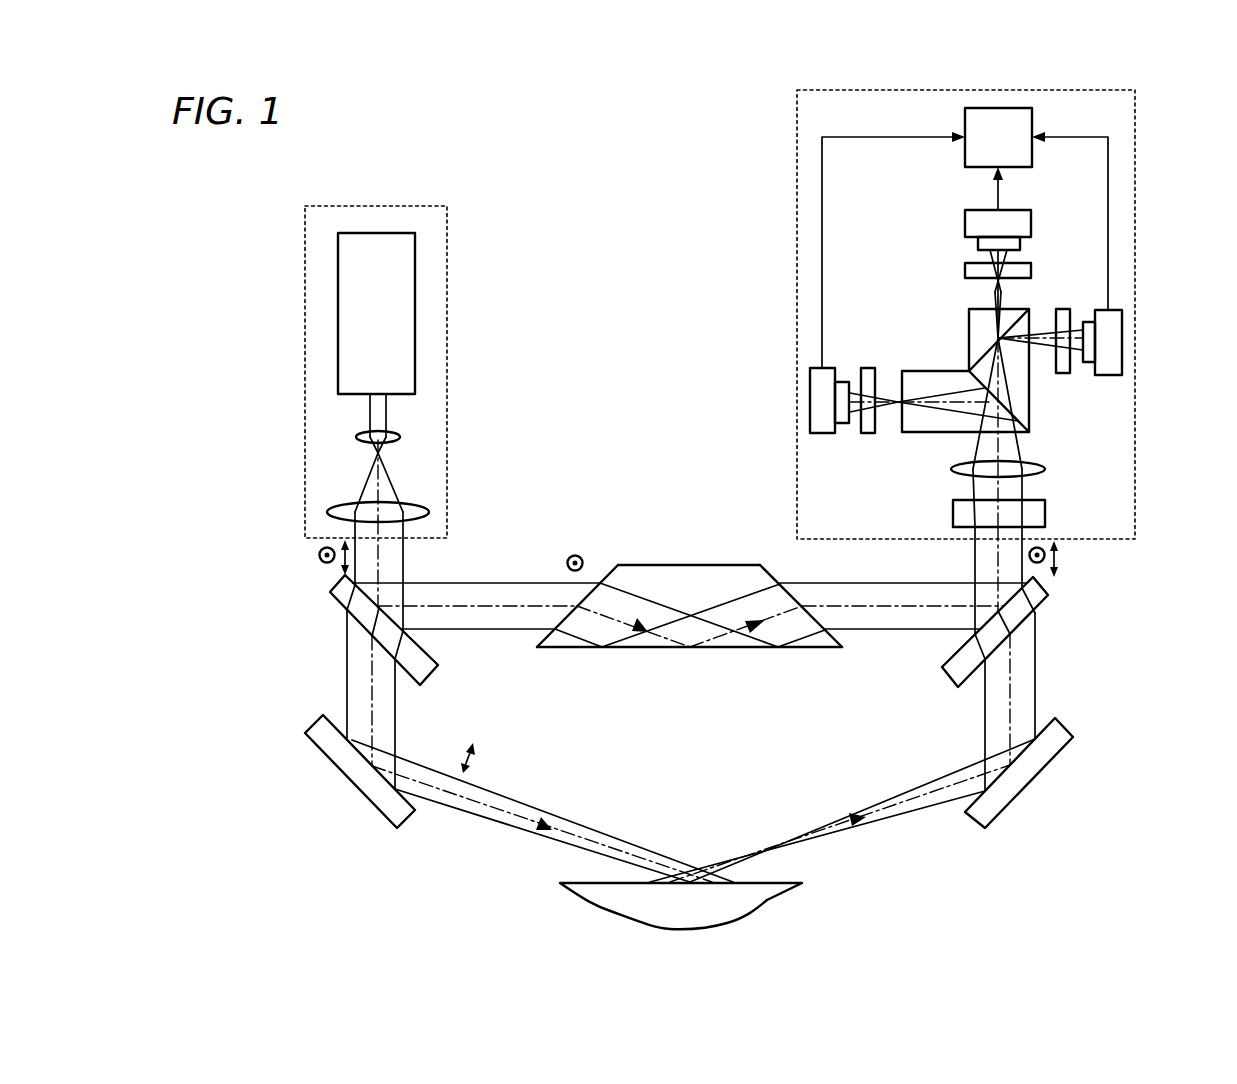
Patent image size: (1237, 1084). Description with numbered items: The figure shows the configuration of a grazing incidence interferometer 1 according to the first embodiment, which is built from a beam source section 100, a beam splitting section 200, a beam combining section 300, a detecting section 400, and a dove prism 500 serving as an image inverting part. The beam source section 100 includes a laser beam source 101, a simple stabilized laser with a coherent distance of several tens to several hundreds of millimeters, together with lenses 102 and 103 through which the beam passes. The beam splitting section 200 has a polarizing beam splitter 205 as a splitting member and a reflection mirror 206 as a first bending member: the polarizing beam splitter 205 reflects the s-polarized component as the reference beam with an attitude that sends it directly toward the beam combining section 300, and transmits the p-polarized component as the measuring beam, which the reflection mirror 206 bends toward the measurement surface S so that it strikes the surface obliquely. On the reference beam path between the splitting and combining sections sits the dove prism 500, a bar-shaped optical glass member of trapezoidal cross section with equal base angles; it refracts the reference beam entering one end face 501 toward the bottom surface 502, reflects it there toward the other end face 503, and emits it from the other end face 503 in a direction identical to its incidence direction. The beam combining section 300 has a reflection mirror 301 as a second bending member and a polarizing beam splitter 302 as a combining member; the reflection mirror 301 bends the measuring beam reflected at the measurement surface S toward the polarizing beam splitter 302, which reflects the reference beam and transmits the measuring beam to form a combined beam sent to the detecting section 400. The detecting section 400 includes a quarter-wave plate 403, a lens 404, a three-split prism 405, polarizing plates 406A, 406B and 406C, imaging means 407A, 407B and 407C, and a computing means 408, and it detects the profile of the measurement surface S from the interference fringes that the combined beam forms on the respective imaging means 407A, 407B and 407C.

The grazing incidence interferometer 1 is at (545, 210).
The beam source section 100 is at (448, 272).
The laser beam source 101 is at (416, 318).
The lens 102 is at (401, 437).
The lens 103 is at (430, 512).
The beam splitting section 200 is at (246, 643).
The polarizing beam splitter 205 is at (330, 590).
The reflection mirror 206 is at (313, 737).
The beam combining section 300 is at (1134, 650).
The reflection mirror 301 is at (1065, 736).
The polarizing beam splitter 302 is at (1050, 590).
The detecting section 400 is at (1137, 122).
The quarter-wave plate 403 is at (1046, 515).
The lens 404 is at (1046, 469).
The three-split prism 405 is at (916, 369).
The polarizing plate 406A is at (867, 436).
The polarizing plate 406B is at (1033, 270).
The polarizing plate 406C is at (1063, 376).
The imaging means 407A is at (809, 402).
The imaging means 407B is at (1033, 222).
The imaging means 407C is at (1123, 340).
The computing means 408 is at (964, 120).
The dove prism 500 is at (688, 564).
The one end face 501 is at (608, 564).
The bottom surface 502 is at (731, 650).
The other end face 503 is at (770, 569).
The measurement surface S is at (768, 884).